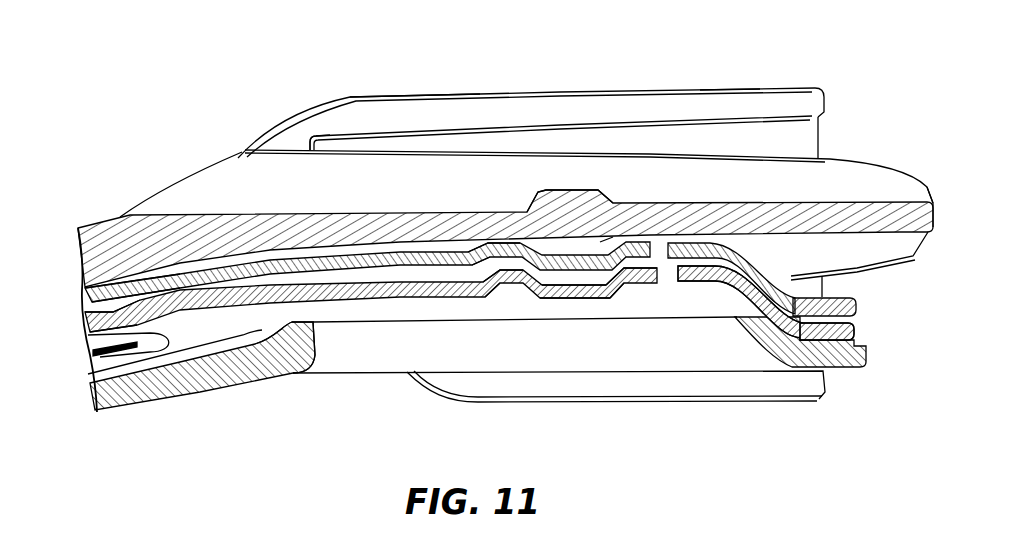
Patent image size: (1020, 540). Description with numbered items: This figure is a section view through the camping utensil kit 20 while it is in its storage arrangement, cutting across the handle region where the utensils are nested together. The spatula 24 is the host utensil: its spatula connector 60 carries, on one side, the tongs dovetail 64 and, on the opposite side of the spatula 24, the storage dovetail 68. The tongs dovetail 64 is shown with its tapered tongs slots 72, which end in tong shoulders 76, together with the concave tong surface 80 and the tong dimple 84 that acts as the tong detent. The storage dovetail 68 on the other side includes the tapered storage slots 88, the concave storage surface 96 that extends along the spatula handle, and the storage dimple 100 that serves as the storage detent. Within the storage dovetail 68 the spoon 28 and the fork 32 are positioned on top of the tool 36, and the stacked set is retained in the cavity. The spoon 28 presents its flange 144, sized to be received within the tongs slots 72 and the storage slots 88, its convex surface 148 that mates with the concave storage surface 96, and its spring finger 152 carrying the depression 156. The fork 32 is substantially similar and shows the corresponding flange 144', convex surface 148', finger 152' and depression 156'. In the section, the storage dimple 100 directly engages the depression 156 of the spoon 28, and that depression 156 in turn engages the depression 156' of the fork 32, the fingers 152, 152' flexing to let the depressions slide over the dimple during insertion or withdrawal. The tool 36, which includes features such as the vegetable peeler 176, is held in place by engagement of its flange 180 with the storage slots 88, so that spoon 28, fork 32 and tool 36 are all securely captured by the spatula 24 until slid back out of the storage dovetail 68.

The camping utensil kit 20 is at (724, 58).
The spatula 24 is at (110, 243).
The spoon 28 is at (85, 293).
The fork 32 is at (85, 322).
The tool 36 is at (121, 388).
The spatula connector 60 is at (466, 60).
The tongs dovetail 64 is at (801, 100).
The storage dovetail 68 is at (797, 384).
The tongs slots 72 is at (796, 138).
The tong shoulders 76 is at (313, 146).
The concave tong surface 80 is at (857, 185).
The tong dimple 84 is at (550, 198).
The storage slots 88 is at (812, 286).
The concave storage surface 96 is at (873, 248).
The storage dimple 100 is at (600, 242).
The flange 144 is at (864, 322).
The flange 144' is at (869, 356).
The convex surface 148 is at (440, 241).
The convex surface 148' is at (443, 251).
The finger 152 is at (455, 343).
The finger 152' is at (502, 363).
The depression 156 is at (575, 370).
The depression 156' is at (624, 362).
The vegetable peeler 176 is at (315, 323).
The flange 180 is at (860, 348).